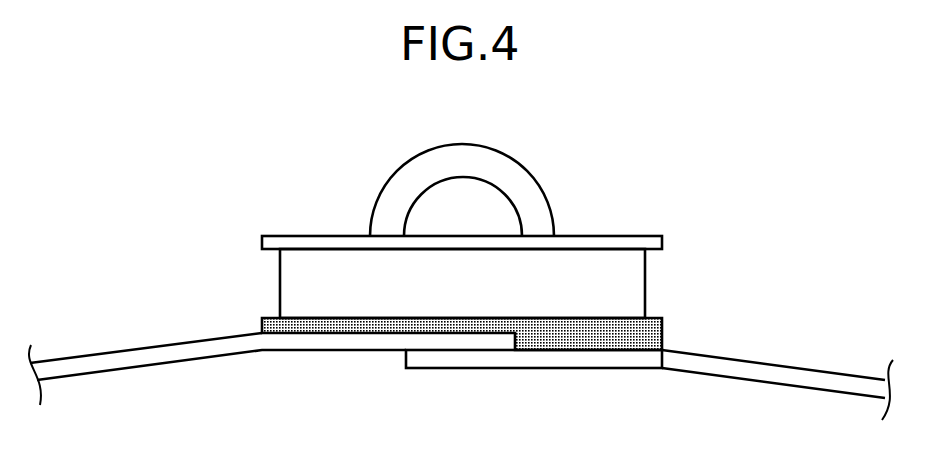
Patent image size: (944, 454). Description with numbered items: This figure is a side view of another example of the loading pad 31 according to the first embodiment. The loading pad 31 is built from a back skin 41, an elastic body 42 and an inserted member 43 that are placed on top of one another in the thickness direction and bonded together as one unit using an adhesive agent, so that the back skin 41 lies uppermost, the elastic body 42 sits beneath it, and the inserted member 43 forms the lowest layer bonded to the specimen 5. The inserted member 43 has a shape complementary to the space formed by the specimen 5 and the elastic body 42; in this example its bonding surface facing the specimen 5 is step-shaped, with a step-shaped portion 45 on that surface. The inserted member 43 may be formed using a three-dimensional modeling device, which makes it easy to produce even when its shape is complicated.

The specimen 5 is at (718, 357).
The loading pad 31 is at (588, 192).
The back skin 41 is at (297, 235).
The elastic body 42 is at (280, 290).
The inserted member 43 is at (260, 321).
The step-shaped portion 45 is at (515, 351).